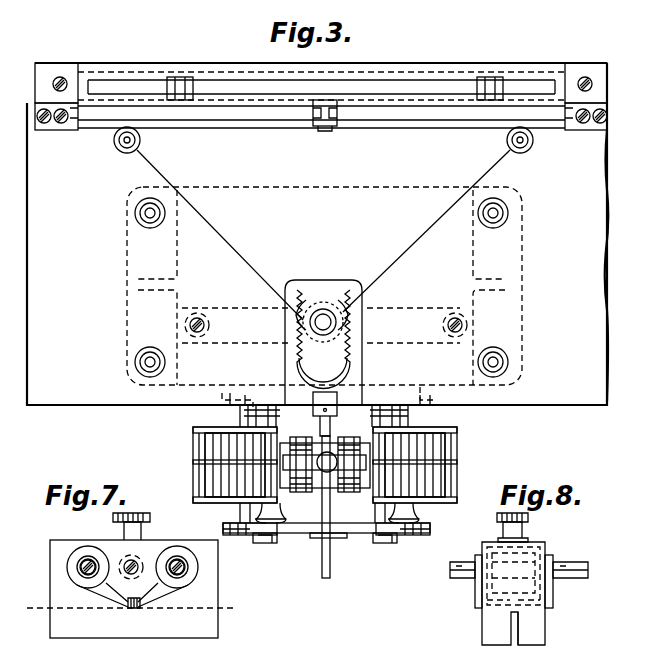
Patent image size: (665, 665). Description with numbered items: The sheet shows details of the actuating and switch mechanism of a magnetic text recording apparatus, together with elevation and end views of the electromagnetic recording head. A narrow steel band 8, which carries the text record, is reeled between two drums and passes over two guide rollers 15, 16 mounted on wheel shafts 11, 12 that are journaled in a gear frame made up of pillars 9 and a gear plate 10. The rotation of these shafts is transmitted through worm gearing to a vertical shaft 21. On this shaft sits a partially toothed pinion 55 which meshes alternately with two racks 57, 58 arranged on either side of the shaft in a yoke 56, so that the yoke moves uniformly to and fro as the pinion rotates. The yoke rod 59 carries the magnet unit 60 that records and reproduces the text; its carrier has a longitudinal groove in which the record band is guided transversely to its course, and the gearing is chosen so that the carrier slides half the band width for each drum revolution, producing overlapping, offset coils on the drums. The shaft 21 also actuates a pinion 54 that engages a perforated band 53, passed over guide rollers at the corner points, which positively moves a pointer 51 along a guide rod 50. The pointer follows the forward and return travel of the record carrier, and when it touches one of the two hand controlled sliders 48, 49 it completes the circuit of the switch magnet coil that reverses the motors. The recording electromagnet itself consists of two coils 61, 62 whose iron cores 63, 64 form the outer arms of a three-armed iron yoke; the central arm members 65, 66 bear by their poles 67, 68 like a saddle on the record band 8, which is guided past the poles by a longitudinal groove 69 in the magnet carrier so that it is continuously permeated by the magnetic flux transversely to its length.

In FIG. 3, the steel band 8 is at (193, 462).
In FIG. 3, the pillars 9 is at (268, 512).
In FIG. 3, the gear plate 10 is at (360, 533).
In FIG. 3, the wheel shaft 11 is at (240, 545).
In FIG. 3, the wheel shaft 12 is at (415, 523).
In FIG. 3, the guide roller 15 is at (238, 492).
In FIG. 3, the guide roller 16 is at (435, 465).
In FIG. 3, the vertical shaft 21 is at (325, 316).
In FIG. 3, the hand controlled slider 48 is at (181, 77).
In FIG. 3, the hand controlled slider 49 is at (493, 77).
In FIG. 3, the guide rod 50 is at (395, 106).
In FIG. 3, the pointer 51 is at (336, 100).
In FIG. 3, the perforated band 53 is at (243, 262).
In FIG. 3, the pinion 54 is at (308, 330).
In FIG. 3, the partially toothed pinion 55 is at (345, 310).
In FIG. 3, the yoke 56 is at (350, 376).
In FIG. 3, the rack 57 is at (297, 297).
In FIG. 3, the rack 58 is at (352, 316).
In FIG. 3, the yoke rod 59 is at (322, 560).
In FIG. 3, the magnet unit 60 is at (325, 465).
In FIG. 7, the magnet unit 60 is at (131, 588).
In FIG. 8, the magnet unit 60 is at (524, 581).
In FIG. 3, the coil 61 is at (301, 444).
In FIG. 7, the coil 61 is at (90, 548).
In FIG. 8, the coil 61 is at (528, 548).
In FIG. 3, the coil 62 is at (347, 445).
In FIG. 7, the coil 62 is at (172, 548).
In FIG. 7, the iron core 63 is at (80, 570).
In FIG. 7, the iron core 64 is at (180, 574).
In FIG. 7, the central arm member 65 is at (106, 598).
In FIG. 7, the central arm member 66 is at (157, 596).
In FIG. 8, the pole 67 is at (492, 600).
In FIG. 8, the pole 68 is at (525, 605).
In FIG. 8, the longitudinal groove 69 is at (519, 640).